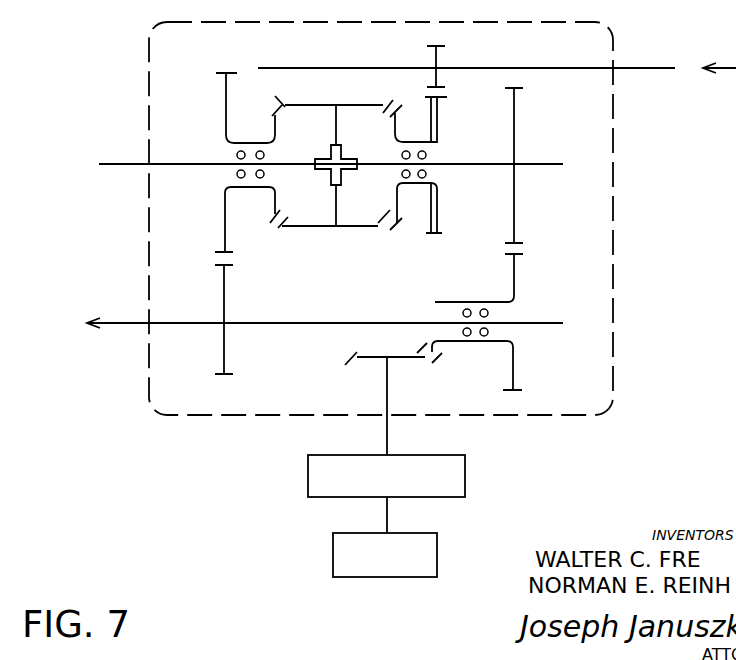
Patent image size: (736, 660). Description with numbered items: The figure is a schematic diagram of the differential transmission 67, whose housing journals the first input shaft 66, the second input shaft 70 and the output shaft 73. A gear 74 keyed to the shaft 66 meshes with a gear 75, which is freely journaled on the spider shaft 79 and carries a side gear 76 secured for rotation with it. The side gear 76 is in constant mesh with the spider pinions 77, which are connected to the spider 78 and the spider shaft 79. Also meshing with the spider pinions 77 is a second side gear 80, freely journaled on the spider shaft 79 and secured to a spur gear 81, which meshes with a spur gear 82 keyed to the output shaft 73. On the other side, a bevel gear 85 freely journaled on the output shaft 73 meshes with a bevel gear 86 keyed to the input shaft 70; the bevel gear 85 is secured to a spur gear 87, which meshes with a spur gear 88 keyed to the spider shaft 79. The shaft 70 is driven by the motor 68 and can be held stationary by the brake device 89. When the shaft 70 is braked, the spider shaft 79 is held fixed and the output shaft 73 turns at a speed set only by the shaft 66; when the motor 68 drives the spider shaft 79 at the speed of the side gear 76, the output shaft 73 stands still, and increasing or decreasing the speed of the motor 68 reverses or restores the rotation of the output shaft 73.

The shaft 66 is at (645, 68).
The differential transmission 67 is at (613, 295).
The motor 68 is at (345, 557).
The shaft 70 is at (387, 435).
The output shaft 73 is at (128, 324).
The gear 74 is at (438, 53).
The gear 75 is at (437, 117).
The side gear 76 is at (397, 202).
The spider pinions 77 is at (370, 228).
The spider 78 is at (331, 145).
The spider shaft 79 is at (128, 165).
The side gear 80 is at (277, 200).
The spur gear 81 is at (224, 232).
The spur gear 82 is at (226, 302).
The bevel gear 85 is at (423, 305).
The bevel gear 86 is at (366, 358).
The spur gear 87 is at (514, 277).
The spur gear 88 is at (514, 218).
The brake device 89 is at (452, 481).